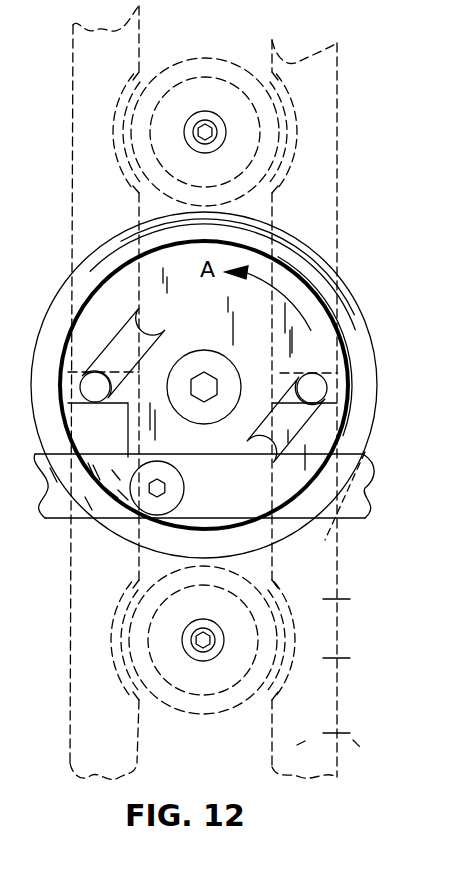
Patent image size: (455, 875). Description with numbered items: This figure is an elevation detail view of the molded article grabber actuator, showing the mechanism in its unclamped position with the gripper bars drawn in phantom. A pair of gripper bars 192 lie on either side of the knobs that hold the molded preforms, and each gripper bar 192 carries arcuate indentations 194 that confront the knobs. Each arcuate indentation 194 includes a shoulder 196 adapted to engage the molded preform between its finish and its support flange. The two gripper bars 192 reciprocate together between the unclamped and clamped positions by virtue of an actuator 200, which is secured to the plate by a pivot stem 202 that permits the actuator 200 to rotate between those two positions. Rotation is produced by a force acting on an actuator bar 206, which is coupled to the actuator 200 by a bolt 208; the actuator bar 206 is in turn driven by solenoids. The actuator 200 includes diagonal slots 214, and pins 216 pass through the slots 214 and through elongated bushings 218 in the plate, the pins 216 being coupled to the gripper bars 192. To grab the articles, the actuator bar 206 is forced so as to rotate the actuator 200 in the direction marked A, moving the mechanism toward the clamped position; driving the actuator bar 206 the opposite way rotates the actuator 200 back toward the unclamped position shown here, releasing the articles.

The gripper bars 192 is at (352, 735).
The arcuate indentations 194 is at (351, 602).
The shoulder 196 is at (351, 660).
The actuator 200 is at (328, 440).
The pivot stem 202 is at (222, 412).
The actuator bar 206 is at (350, 517).
The bolt 208 is at (180, 476).
The diagonal slots 214 is at (118, 328).
The pins 216 is at (243, 385).
The elongated bushings 218 is at (347, 362).